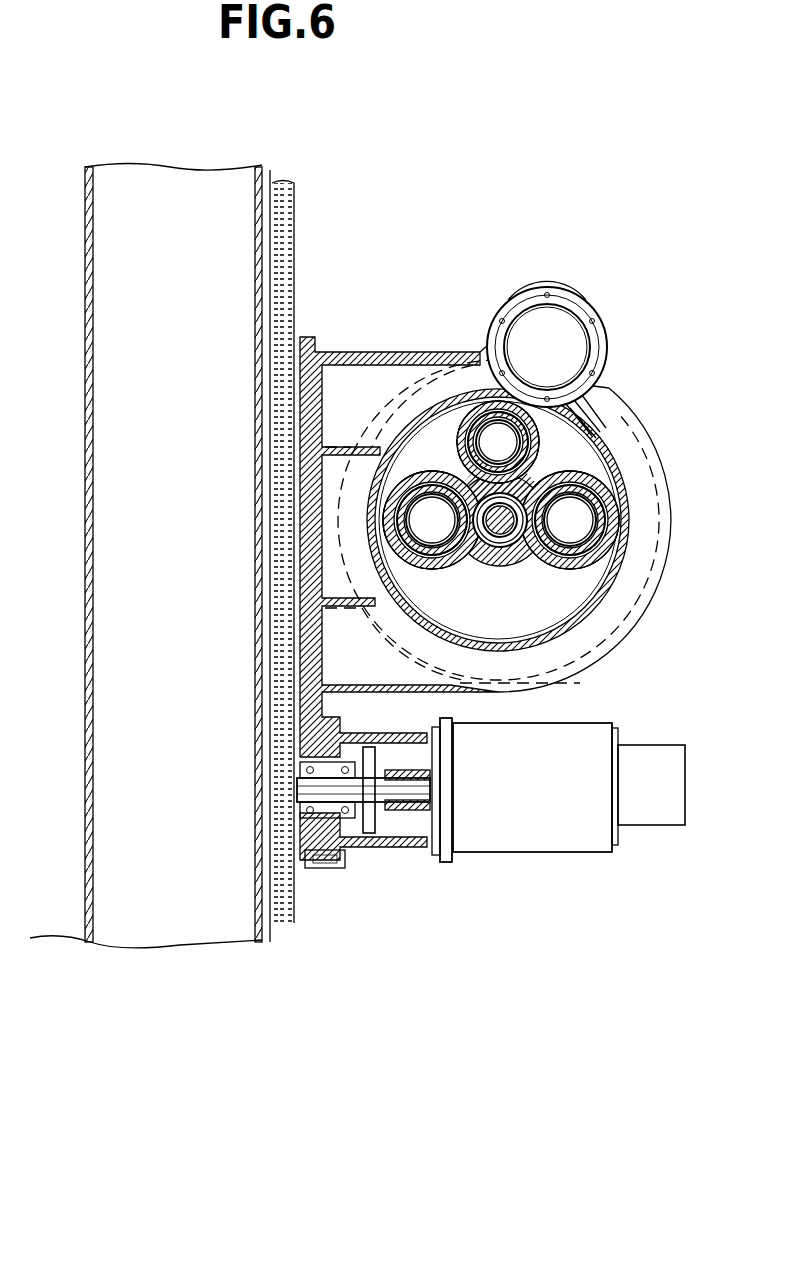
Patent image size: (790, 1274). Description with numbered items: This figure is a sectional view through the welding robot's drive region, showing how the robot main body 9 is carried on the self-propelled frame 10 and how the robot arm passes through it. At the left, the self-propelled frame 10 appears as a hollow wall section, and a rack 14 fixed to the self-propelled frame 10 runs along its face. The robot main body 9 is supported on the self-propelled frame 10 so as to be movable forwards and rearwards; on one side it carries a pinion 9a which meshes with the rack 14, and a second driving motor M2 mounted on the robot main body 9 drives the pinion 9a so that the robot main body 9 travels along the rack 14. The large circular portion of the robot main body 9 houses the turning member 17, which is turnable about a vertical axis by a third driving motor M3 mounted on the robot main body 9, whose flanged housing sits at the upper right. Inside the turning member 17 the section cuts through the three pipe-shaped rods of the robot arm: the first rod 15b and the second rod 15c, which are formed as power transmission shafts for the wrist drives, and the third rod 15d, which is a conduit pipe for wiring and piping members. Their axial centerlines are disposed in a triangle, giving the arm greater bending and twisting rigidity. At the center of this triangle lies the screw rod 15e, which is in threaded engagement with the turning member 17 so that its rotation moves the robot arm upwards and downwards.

The self-propelled frame 10 is at (85, 197).
The rack 14 is at (290, 893).
The robot main body 9 is at (368, 370).
The pinion 9a is at (272, 792).
The first rod 15b is at (423, 552).
The second rod 15c is at (603, 522).
The third rod 15d is at (520, 443).
The screw rod 15e is at (507, 548).
The turning member 17 is at (557, 563).
The second driving motor M2 is at (520, 850).
The third driving motor M3 is at (518, 330).